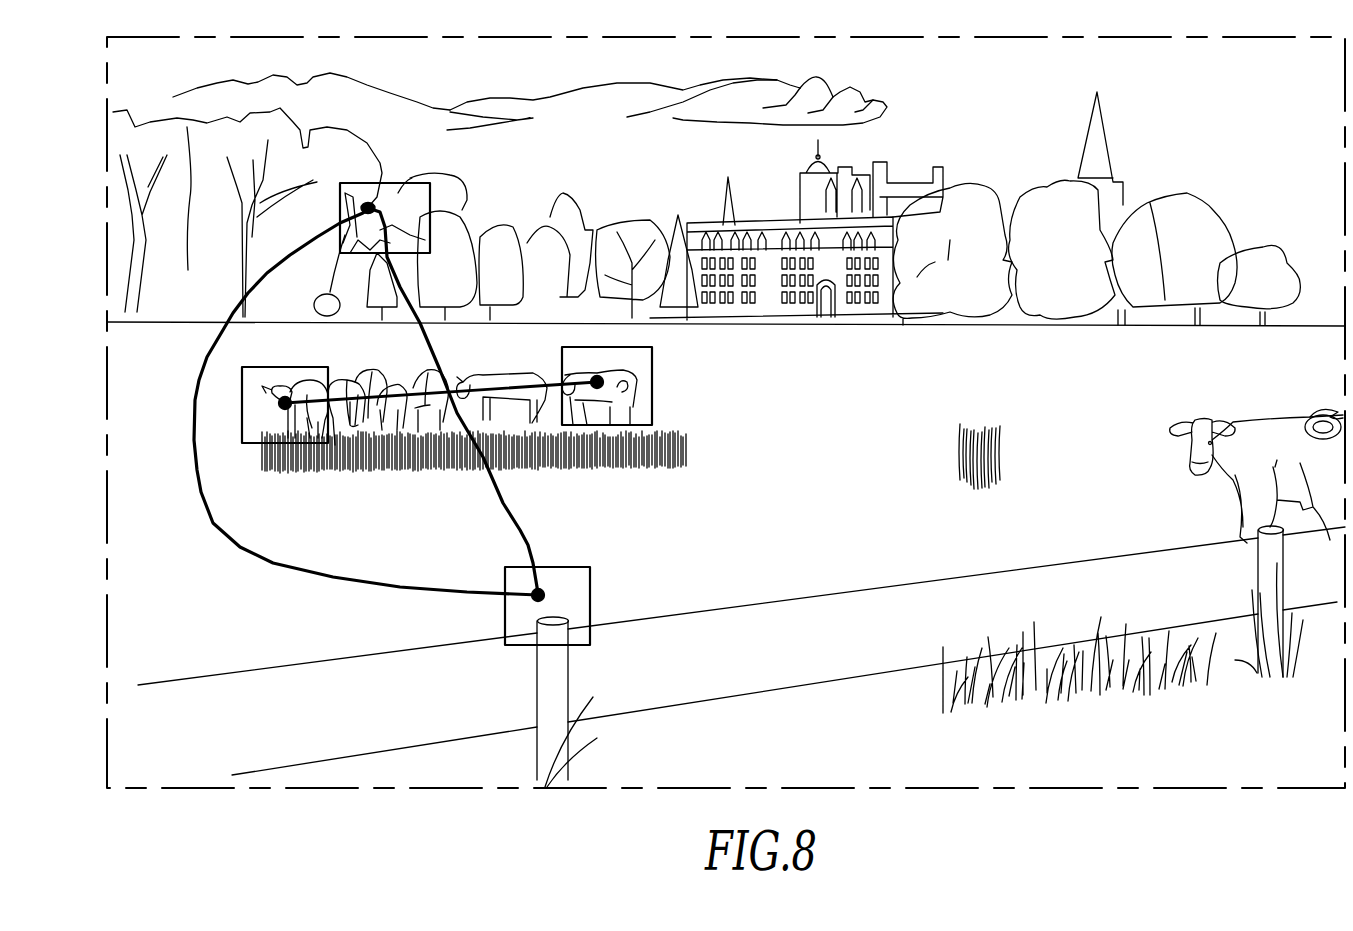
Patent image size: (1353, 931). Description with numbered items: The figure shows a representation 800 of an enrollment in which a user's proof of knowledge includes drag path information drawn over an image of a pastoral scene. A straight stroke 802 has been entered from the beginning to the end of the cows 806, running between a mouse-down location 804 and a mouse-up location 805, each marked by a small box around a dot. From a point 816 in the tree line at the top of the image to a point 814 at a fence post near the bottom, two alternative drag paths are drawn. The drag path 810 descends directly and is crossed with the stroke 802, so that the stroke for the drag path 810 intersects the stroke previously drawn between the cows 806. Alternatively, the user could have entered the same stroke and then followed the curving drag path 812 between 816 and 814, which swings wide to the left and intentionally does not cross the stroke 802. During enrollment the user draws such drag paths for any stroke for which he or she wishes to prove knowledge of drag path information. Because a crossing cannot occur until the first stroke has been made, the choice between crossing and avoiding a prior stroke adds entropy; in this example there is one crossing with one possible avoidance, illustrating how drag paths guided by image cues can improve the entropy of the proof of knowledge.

The representation 800 is at (88, 518).
The stroke 802 is at (489, 383).
The mouse-down location 804 is at (285, 405).
The mouse-up location 805 is at (598, 382).
The cows 806 is at (395, 472).
The drag path 810 is at (503, 512).
The curving drag path 812 is at (260, 557).
The drag path endpoint 814 is at (538, 595).
The drag path endpoint 816 is at (380, 203).